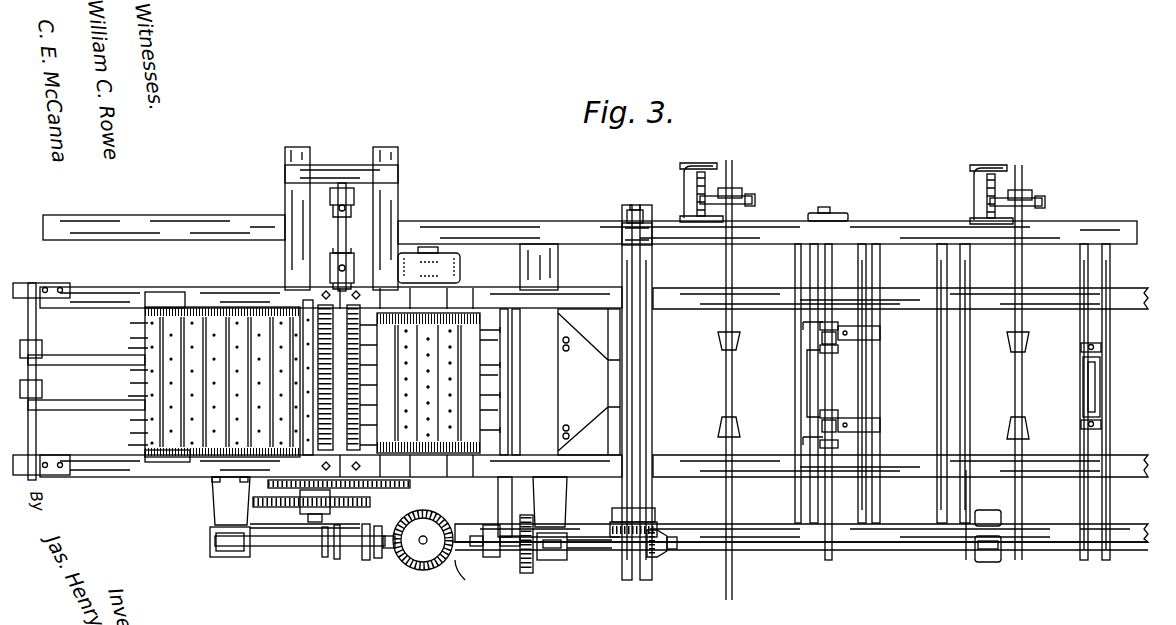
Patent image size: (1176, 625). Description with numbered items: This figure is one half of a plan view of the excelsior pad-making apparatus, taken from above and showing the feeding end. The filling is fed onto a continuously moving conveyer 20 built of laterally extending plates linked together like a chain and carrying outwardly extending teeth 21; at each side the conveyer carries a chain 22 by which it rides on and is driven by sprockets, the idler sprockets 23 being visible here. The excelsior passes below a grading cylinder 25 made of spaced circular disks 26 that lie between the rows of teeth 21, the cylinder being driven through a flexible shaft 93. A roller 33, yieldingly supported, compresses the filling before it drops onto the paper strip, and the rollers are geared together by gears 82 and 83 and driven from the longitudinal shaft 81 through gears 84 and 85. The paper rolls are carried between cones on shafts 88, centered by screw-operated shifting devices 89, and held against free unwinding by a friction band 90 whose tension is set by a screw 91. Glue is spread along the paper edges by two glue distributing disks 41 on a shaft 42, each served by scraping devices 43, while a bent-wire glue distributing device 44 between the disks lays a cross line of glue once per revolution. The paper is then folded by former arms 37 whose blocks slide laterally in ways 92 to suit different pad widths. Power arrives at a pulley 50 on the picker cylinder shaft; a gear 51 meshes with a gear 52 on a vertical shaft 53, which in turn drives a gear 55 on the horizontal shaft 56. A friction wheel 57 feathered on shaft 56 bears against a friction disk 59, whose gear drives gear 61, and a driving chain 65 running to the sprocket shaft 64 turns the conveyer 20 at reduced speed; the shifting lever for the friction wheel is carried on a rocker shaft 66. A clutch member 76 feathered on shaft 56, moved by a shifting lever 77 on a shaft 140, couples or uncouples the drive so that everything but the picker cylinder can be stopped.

The conveyer 20 is at (145, 385).
The teeth 21 is at (145, 340).
The chain 22 is at (205, 302).
The sprockets 23 is at (472, 352).
The grading cylinder 25 is at (358, 320).
The circular disks 26 is at (390, 322).
The roller 33 is at (645, 382).
The formers 37 is at (1098, 392).
The glue distributing disks 41 is at (806, 322).
The shaft 42 is at (832, 258).
The scraping devices 43 is at (834, 322).
The glue distributing device 44 is at (808, 388).
The pulley 50 is at (462, 269).
The gear 51 is at (402, 562).
The gear 52 is at (432, 570).
The vertical shaft 53 is at (425, 546).
The gear 55 is at (370, 558).
The shaft 56 is at (283, 548).
The friction wheel 57 is at (325, 530).
The friction disk 59 is at (254, 528).
The gear 61 is at (248, 500).
The shaft 64 is at (350, 508).
The driving chain 65 is at (382, 489).
The rocker shaft 66 is at (388, 549).
The friction clutch member 76 is at (507, 558).
The shifting lever 77 is at (502, 522).
The shaft 81 is at (983, 516).
The gear 82 is at (632, 224).
The gear 83 is at (528, 575).
The gear 84 is at (640, 540).
The gear 85 is at (665, 558).
The shafts 88 is at (735, 366).
The shifting devices 89 is at (698, 166).
The friction band 90 is at (736, 192).
The screw 91 is at (756, 203).
The ways 92 is at (1105, 340).
The flexible shaft 93 is at (348, 234).
The shaft 140 is at (590, 595).